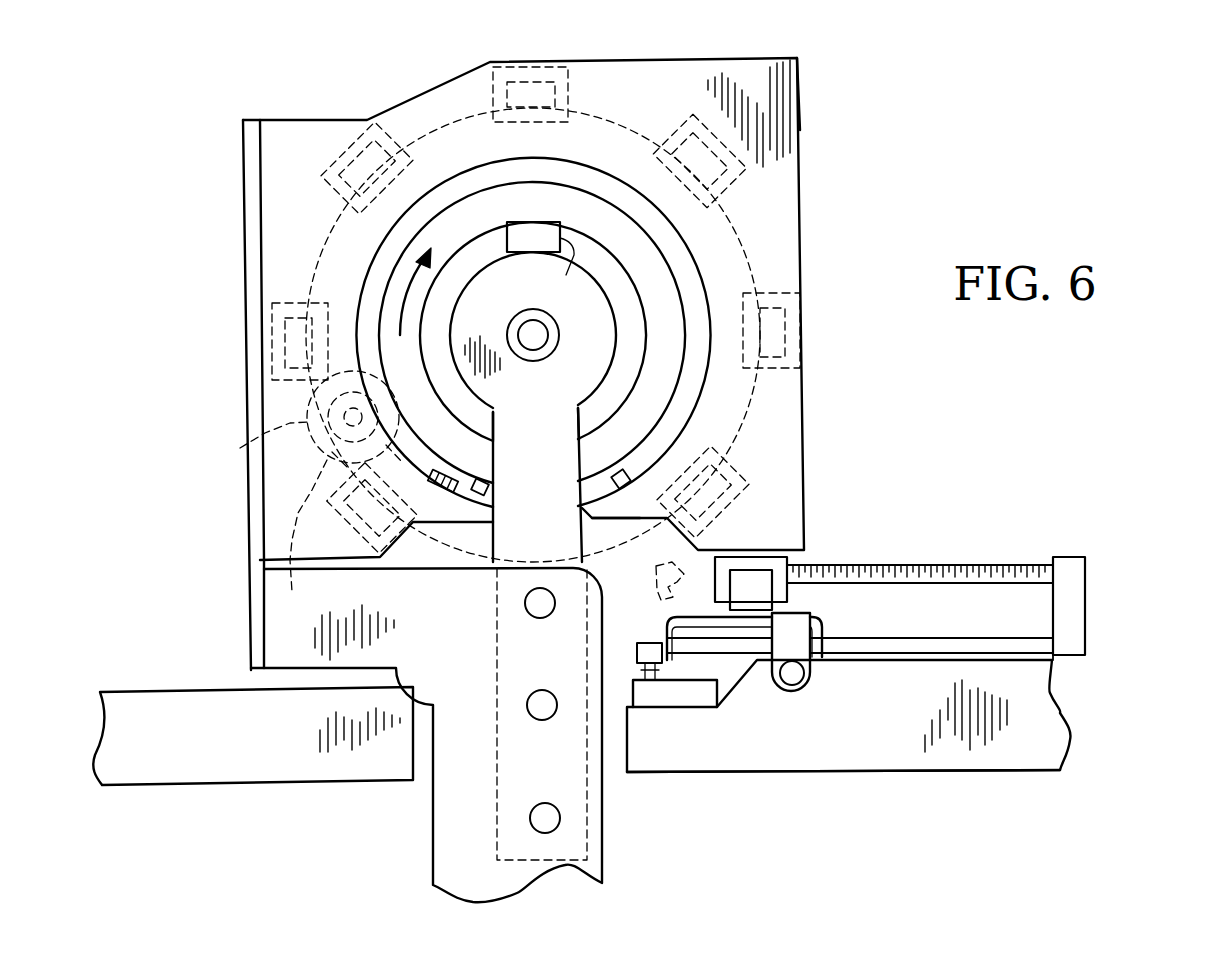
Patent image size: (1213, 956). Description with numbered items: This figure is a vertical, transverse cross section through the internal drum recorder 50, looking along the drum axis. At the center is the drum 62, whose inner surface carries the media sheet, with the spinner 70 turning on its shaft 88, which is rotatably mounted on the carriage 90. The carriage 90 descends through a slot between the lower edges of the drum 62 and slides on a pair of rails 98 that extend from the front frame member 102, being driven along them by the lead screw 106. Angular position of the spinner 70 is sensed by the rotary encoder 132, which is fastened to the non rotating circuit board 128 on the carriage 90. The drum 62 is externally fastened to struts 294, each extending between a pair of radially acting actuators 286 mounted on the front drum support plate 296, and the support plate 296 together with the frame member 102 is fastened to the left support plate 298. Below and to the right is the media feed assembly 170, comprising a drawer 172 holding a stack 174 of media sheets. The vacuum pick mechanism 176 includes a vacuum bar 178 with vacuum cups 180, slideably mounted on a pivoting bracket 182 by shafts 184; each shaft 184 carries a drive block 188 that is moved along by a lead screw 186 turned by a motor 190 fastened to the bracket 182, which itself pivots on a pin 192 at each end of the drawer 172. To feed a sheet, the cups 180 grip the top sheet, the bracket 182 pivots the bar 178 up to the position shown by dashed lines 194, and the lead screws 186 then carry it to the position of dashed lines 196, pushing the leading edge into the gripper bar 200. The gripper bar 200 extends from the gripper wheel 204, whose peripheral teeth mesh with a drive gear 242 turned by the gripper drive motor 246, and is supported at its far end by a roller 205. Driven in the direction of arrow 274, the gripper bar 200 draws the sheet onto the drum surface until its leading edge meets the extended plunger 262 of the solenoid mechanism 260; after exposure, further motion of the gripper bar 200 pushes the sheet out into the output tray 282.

The internal drum recorder 50 is at (812, 190).
The drum 62 is at (470, 110).
The spinner 70 is at (587, 183).
The shaft 88 is at (560, 333).
The carriage 90 is at (468, 265).
The rails 98 is at (537, 612).
The front frame member 102 is at (604, 835).
The lead screw 106 is at (528, 704).
The non rotating circuit board 128 is at (568, 226).
The rotary encoder 132 is at (548, 268).
The media feed assembly 170 is at (790, 782).
The drawer 172 is at (849, 749).
The stack 174 is at (700, 690).
The vacuum pick mechanism 176 is at (800, 595).
The vacuum bar 178 is at (637, 647).
The vacuum cups 180 is at (643, 673).
The pivoting bracket 182 is at (822, 618).
The shaft 184 is at (1010, 637).
The lead screw 186 is at (954, 564).
The drive block 188 is at (1087, 600).
The motor 190 is at (757, 557).
The pin 192 is at (795, 688).
The dashed lines 194 is at (656, 568).
The dashed lines 196 is at (470, 460).
The gripper bar 200 is at (440, 475).
The gripper wheel 204 is at (450, 180).
The roller 205 is at (472, 478).
The drive gear 242 is at (321, 516).
The gripper drive motor 246 is at (300, 433).
The solenoid mechanism 260 is at (640, 519).
The plunger 262 is at (614, 470).
The arrow 274 is at (403, 290).
The output tray 282 is at (241, 792).
The actuators 286 is at (570, 87).
The struts 294 is at (525, 82).
The front drum support plate 296 is at (802, 134).
The left support plate 298 is at (246, 505).